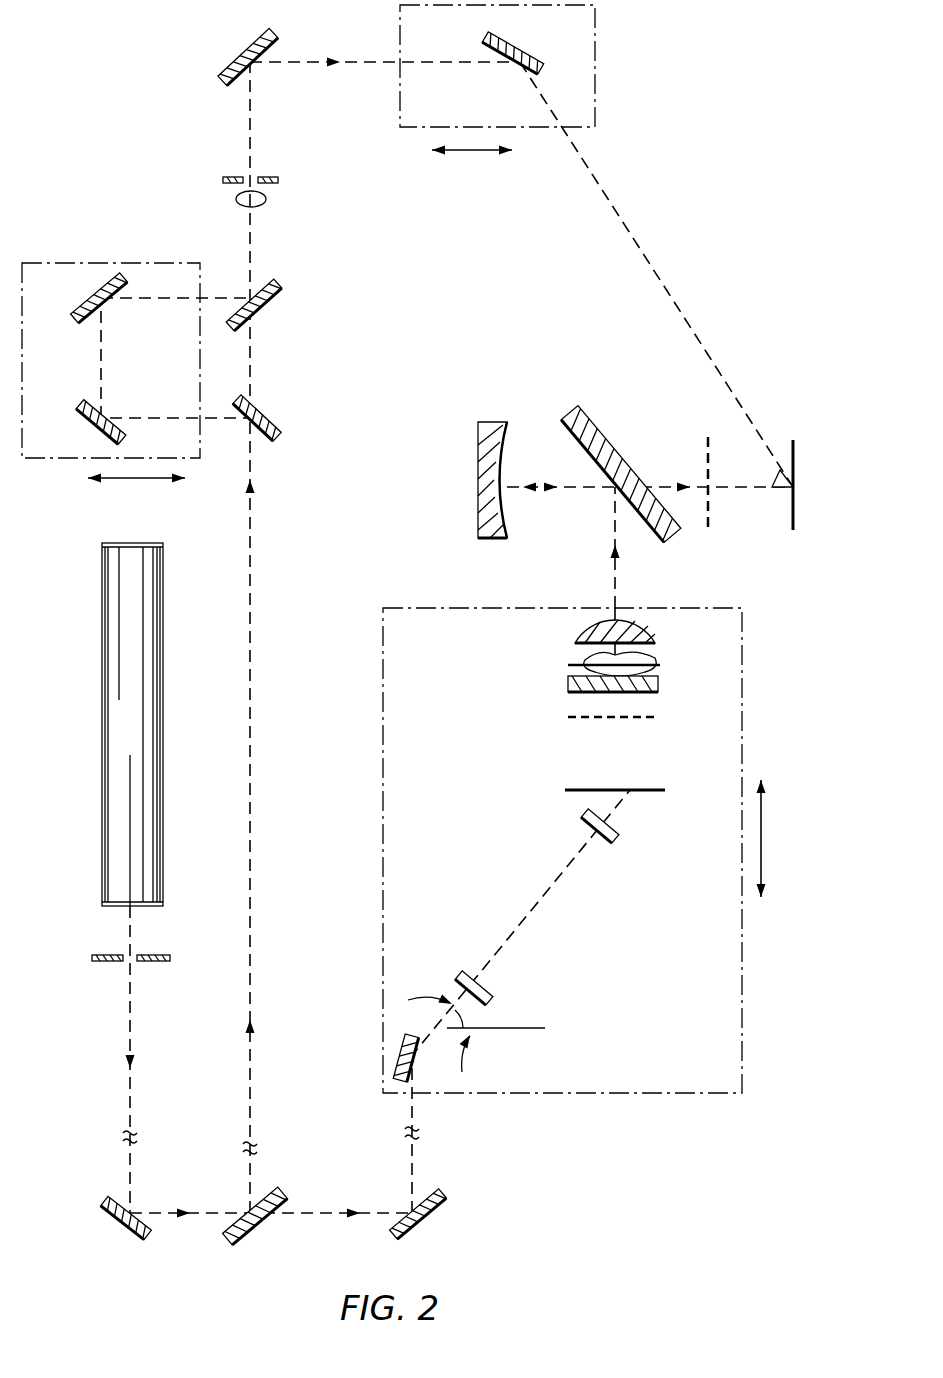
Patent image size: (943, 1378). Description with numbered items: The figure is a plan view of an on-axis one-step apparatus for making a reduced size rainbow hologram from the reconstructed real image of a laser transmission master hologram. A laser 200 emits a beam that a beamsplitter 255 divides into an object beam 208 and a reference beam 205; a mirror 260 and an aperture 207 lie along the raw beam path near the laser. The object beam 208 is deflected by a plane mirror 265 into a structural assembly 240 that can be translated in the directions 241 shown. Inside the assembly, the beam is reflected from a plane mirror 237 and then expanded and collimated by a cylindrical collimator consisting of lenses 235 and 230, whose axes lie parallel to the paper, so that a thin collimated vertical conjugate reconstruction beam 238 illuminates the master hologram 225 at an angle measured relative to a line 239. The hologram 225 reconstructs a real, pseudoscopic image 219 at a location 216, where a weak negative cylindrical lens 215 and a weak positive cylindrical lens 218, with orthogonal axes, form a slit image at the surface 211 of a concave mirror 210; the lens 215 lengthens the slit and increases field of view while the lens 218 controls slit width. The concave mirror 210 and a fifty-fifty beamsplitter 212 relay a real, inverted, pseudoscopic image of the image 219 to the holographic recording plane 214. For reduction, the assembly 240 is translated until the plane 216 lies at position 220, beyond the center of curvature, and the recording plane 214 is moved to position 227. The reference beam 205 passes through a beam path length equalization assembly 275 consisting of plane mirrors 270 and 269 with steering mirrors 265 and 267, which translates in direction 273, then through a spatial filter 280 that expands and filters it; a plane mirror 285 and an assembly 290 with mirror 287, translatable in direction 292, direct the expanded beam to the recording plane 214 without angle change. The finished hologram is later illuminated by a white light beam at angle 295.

The laser 200 is at (102, 829).
The reference beam 205 is at (250, 835).
The aperture 207 is at (100, 965).
The object beam 208 is at (330, 1216).
The concave mirror 210 is at (476, 440).
The surface of concave mirror 211 is at (497, 470).
The 50%-50% beamsplitter 212 is at (636, 418).
The holographic recording plane 214 is at (792, 455).
The cylindrical lens 215 is at (656, 684).
The image location 216 is at (658, 667).
The cylindrical lens 218 is at (576, 641).
The real image 219 is at (645, 660).
The object position 220 is at (654, 717).
The hologram H1 225 is at (664, 793).
The image position 227 is at (707, 437).
The cylindrical collimator lens 230 is at (586, 816).
The cylindrical collimator lens 235 is at (495, 988).
The plane mirror 237 is at (400, 1052).
The conjugate reconstruction beam 238 is at (623, 800).
The reference axis line 239 is at (483, 1017).
The structural assembly 240 is at (383, 963).
The directions of movement 241 is at (762, 835).
The beamsplitter 255 is at (233, 1240).
The mirror 260 is at (127, 1230).
The plane mirror 265 is at (428, 1222).
The steering mirror 267 is at (272, 305).
The plane mirror 269 is at (91, 302).
The plane mirror 270 is at (89, 422).
The direction of translation 273 is at (144, 481).
The beam path length equalization assembly 275 is at (145, 236).
The spatial filter 280 is at (278, 182).
The plane mirror 285 is at (232, 63).
The mirror 287 is at (528, 30).
The assembly 290 is at (595, 62).
The direction of translation 292 is at (470, 152).
The angle 295 is at (783, 478).